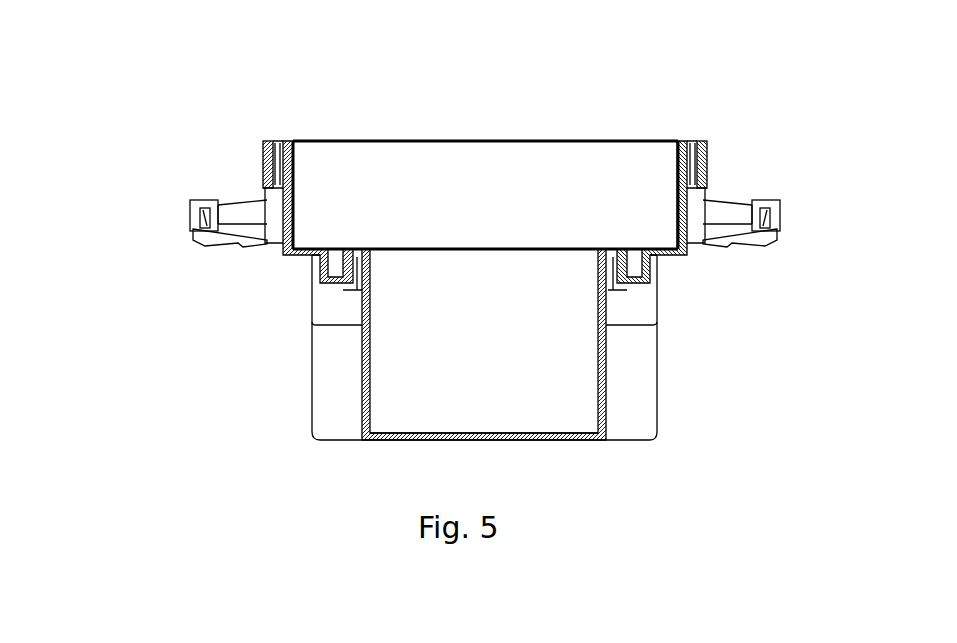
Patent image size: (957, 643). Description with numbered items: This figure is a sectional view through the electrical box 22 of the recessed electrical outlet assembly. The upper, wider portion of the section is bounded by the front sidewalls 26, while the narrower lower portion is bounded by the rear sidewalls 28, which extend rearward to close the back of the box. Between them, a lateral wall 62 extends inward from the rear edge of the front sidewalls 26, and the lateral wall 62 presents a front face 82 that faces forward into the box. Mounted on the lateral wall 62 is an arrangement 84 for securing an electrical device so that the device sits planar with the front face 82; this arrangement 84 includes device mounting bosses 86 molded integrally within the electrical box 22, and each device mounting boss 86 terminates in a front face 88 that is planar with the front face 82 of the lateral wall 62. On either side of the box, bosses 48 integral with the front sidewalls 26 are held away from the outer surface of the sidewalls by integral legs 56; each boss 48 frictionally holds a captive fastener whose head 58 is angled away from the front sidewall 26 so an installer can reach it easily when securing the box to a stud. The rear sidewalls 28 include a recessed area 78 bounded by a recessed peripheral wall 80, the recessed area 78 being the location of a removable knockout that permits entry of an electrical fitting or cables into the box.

The electrical box 22 is at (156, 127).
The front sidewall 26 is at (536, 216).
The rear sidewall 28 is at (504, 352).
The boss 48 is at (194, 213).
The integral leg 56 is at (732, 200).
The head of captive fastener 58 is at (486, 140).
The lateral wall 62 is at (428, 247).
The recessed area 78 is at (632, 360).
The recessed peripheral wall 80 is at (639, 284).
The front face of lateral wall 82 is at (456, 236).
The arrangement for securing an electrical device 84 is at (357, 222).
The device mounting boss 86 is at (370, 262).
The front face of device mounting boss 88 is at (603, 236).